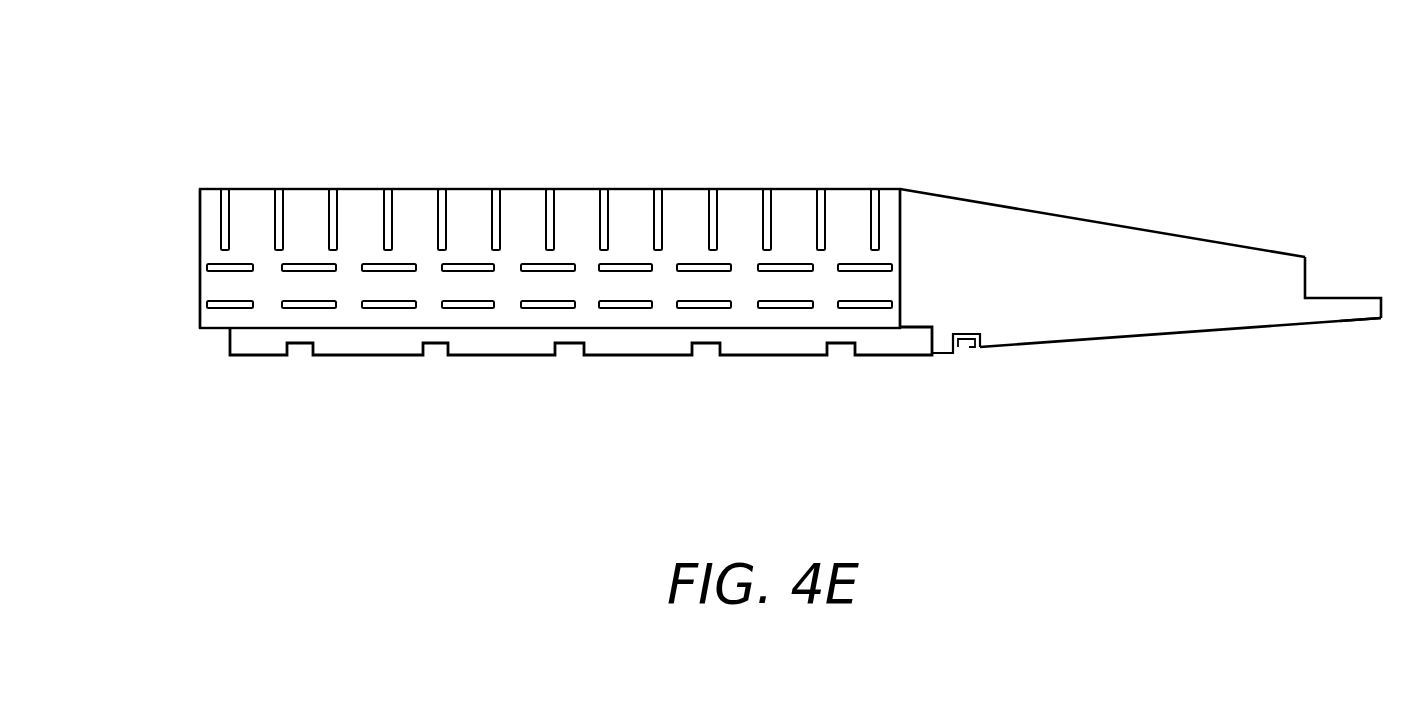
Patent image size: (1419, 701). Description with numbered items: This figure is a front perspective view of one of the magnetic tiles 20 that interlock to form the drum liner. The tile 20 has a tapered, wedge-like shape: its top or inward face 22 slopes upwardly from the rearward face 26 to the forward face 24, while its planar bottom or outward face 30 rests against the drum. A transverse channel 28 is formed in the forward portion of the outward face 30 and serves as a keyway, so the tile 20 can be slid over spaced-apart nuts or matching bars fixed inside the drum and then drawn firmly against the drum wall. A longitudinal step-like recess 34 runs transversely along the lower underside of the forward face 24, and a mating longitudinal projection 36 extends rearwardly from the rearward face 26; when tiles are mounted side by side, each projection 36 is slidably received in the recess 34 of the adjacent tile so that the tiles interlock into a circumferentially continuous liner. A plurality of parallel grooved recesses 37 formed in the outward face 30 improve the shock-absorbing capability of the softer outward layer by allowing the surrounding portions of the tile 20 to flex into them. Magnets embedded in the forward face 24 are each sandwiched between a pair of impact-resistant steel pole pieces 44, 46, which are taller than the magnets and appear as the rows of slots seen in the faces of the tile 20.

The magnetic tile 20 is at (790, 105).
The inward face 22 is at (1026, 208).
The forward face 24 is at (312, 212).
The rearward face 26 is at (1310, 271).
The transverse channel 28 is at (966, 349).
The outward face 30 is at (1125, 340).
The step-like recess 34 is at (196, 353).
The longitudinal projection 36 is at (1339, 310).
The grooved recesses 37 is at (300, 352).
The pole piece 44 is at (225, 190).
The pole piece 46 is at (279, 190).